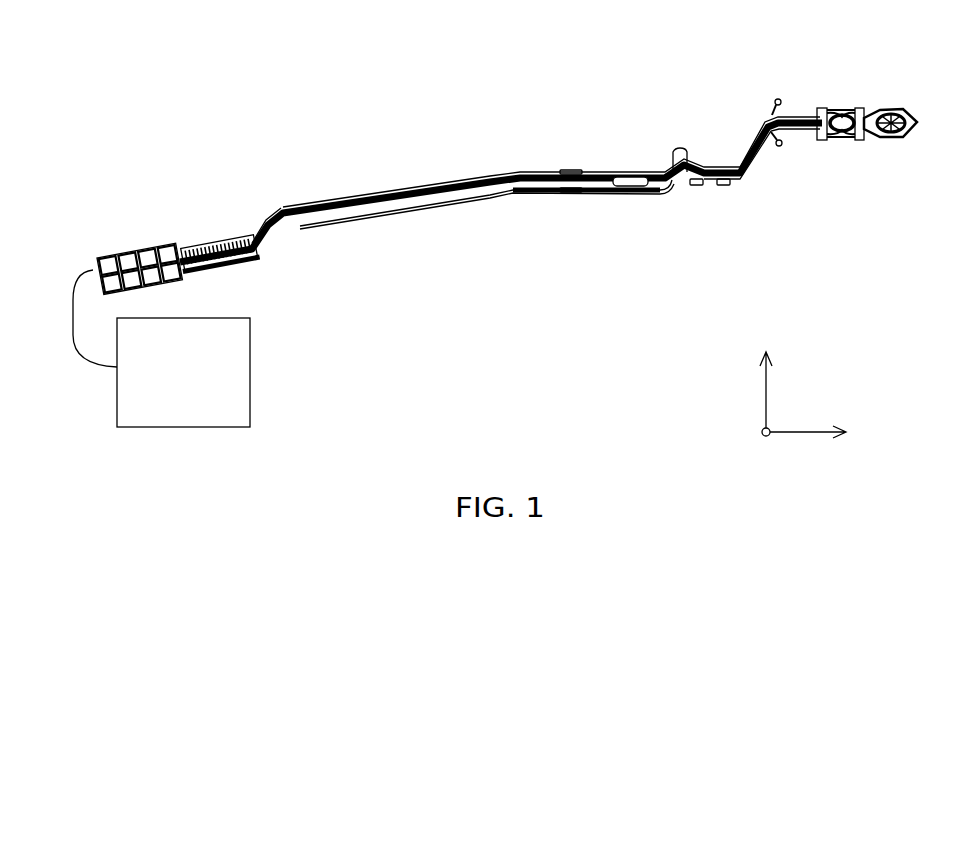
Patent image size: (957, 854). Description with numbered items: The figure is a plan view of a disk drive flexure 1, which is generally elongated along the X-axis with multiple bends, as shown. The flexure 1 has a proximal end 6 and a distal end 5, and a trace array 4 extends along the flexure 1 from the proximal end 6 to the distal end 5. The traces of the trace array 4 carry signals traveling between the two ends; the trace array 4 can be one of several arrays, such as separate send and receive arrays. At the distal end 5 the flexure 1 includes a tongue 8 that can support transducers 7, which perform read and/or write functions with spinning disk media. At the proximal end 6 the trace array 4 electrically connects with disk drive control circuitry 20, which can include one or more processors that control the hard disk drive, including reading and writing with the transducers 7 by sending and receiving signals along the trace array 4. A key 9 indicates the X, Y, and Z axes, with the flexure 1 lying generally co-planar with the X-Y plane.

The flexure 1 is at (489, 112).
The trace array 4 is at (540, 188).
The distal end 5 is at (866, 117).
The proximal end 6 is at (144, 217).
The transducers 7 is at (889, 158).
The tongue 8 is at (893, 108).
The key 9 is at (697, 424).
The disk drive control circuitry 20 is at (173, 428).